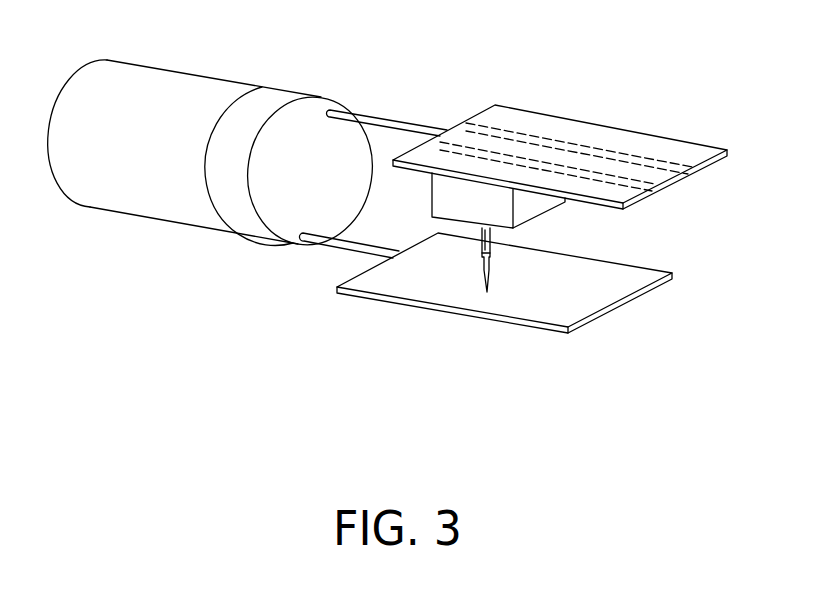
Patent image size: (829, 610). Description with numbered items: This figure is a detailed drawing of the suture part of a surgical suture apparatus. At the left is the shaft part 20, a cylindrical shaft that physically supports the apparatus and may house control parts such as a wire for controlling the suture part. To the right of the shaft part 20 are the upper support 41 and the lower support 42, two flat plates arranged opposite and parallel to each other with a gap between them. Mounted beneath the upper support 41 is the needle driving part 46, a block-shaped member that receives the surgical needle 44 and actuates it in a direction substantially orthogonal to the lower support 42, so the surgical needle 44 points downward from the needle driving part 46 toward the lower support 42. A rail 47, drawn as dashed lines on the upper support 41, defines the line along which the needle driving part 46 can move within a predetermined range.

The shaft part 20 is at (197, 75).
The upper support 41 is at (690, 178).
The rail 47 is at (517, 133).
The needle driving part 46 is at (553, 213).
The surgical needle 44 is at (478, 272).
The lower support 42 is at (632, 296).